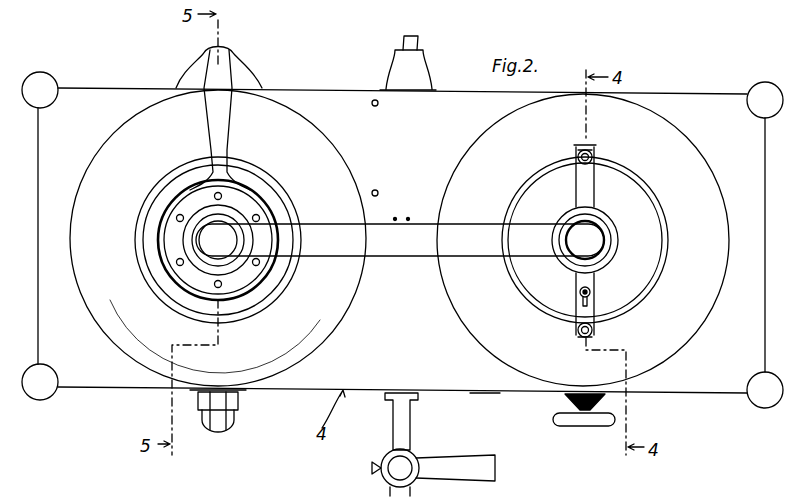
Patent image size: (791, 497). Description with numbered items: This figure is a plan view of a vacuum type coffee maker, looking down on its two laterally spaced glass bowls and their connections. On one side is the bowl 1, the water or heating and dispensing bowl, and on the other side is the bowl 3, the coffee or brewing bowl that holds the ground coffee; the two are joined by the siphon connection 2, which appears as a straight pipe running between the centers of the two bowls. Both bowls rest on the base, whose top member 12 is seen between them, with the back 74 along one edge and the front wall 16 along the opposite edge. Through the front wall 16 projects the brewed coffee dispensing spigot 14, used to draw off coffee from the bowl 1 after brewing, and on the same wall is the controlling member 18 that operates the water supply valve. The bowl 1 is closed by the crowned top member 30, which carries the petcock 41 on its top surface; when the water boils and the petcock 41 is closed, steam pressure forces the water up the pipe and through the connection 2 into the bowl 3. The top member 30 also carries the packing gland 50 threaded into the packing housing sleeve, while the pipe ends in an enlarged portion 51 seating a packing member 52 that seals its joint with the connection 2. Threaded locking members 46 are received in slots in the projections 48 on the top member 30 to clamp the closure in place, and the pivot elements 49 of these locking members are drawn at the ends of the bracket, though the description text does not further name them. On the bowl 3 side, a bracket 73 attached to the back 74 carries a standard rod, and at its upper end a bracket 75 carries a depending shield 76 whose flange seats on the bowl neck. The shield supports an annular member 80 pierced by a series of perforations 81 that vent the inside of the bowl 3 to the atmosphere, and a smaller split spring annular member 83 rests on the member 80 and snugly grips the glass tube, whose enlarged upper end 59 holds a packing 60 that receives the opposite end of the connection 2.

The bowl 1 is at (668, 130).
The connection 2 is at (394, 256).
The bowl 3 is at (283, 112).
The top member 12 is at (316, 380).
The dispensing spigot 14 is at (410, 452).
The front wall 16 is at (487, 394).
The controlling member 18 is at (570, 426).
The top member 30 is at (546, 300).
The petcock 41 is at (592, 292).
The locking members 46 is at (576, 152).
The projections 48 is at (591, 147).
The pin 49 is at (594, 157).
The packing gland 50 is at (618, 238).
The enlarged portion 51 is at (606, 222).
The packing member 52 is at (590, 218).
The enlarged upper end 59 is at (190, 190).
The packing 60 is at (228, 222).
The bracket 73 is at (240, 72).
The back 74 is at (344, 90).
The bracket 75 is at (212, 120).
The depending shield 76 is at (152, 205).
The annular member 80 is at (190, 290).
The perforations 81 is at (176, 262).
The annular member 83 is at (240, 266).